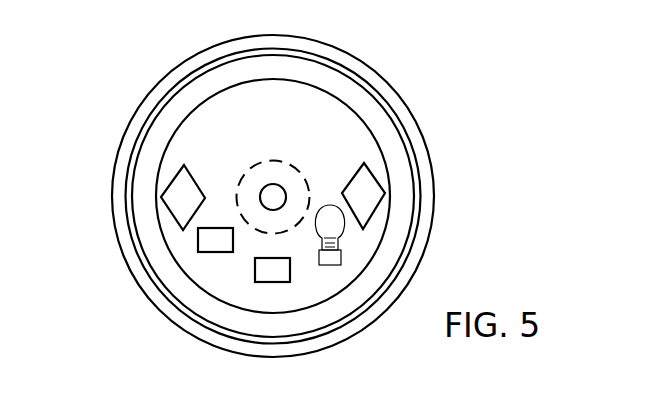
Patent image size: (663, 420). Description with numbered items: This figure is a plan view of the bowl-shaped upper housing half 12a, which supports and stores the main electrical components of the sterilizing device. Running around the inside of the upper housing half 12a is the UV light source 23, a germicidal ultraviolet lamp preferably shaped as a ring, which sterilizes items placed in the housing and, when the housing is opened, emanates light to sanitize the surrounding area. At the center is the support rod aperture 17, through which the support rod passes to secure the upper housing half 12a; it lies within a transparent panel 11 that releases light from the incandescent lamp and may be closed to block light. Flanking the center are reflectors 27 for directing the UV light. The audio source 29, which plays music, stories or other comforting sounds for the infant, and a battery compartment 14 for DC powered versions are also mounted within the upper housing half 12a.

The upper housing half 12a is at (423, 142).
The UV light source 23 is at (203, 87).
The transparent panel 11 is at (240, 180).
The support rod aperture 17 is at (285, 190).
The reflector 27 is at (163, 208).
The audio source 29 is at (201, 252).
The battery compartment 14 is at (280, 283).